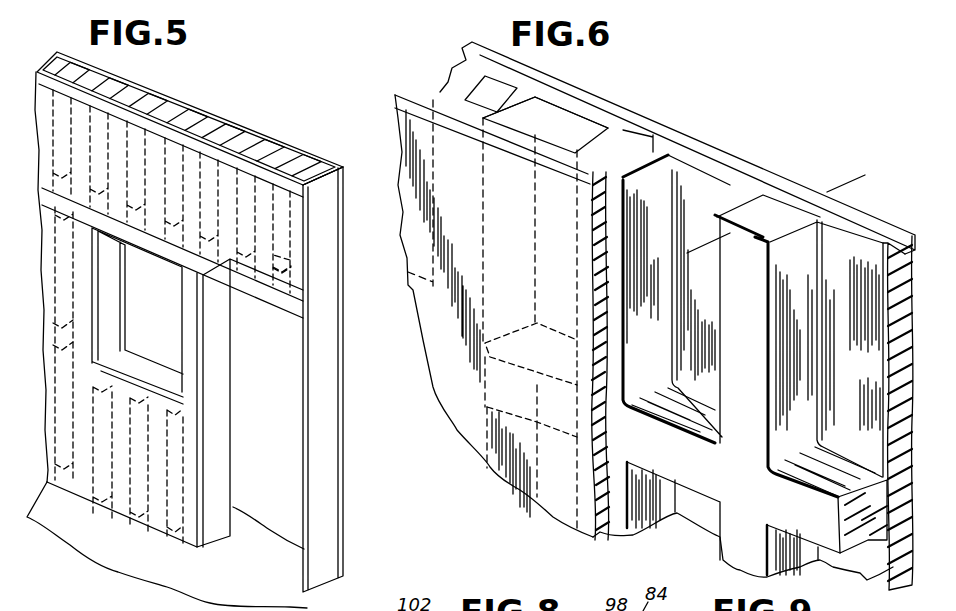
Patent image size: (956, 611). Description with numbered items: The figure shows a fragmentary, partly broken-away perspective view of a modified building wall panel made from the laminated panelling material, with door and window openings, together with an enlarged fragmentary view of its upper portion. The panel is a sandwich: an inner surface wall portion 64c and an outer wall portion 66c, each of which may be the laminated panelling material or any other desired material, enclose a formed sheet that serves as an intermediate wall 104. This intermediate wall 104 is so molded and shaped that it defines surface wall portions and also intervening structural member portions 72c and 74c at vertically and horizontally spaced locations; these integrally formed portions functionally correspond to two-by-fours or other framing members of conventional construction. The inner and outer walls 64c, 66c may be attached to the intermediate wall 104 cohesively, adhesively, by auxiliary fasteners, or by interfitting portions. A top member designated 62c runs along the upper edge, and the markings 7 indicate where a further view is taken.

In FIG. 5, the top rail 62c is at (195, 94).
In FIG. 6, the top rail 62c is at (708, 134).
In FIG. 5, the inner surface wall portion 64c is at (313, 253).
In FIG. 6, the inner surface wall portion 64c is at (418, 86).
In FIG. 5, the outer wall portion 66c is at (345, 207).
In FIG. 6, the outer wall portion 66c is at (656, 118).
In FIG. 5, the structural member portion 72c is at (240, 193).
In FIG. 6, the structural member portion 72c is at (787, 267).
In FIG. 5, the structural member portion 74c is at (283, 276).
In FIG. 6, the structural member portion 74c is at (823, 465).
In FIG. 5, the intermediate wall 104 is at (333, 166).
In FIG. 6, the intermediate wall 104 is at (567, 103).
In FIG. 6, the section line 7- 7 is at (851, 178).